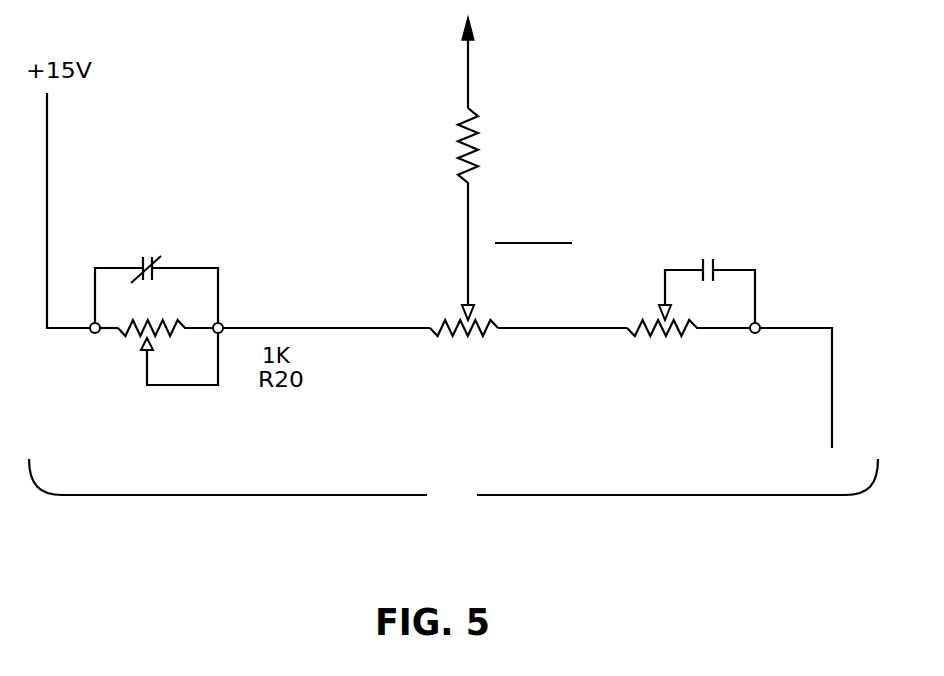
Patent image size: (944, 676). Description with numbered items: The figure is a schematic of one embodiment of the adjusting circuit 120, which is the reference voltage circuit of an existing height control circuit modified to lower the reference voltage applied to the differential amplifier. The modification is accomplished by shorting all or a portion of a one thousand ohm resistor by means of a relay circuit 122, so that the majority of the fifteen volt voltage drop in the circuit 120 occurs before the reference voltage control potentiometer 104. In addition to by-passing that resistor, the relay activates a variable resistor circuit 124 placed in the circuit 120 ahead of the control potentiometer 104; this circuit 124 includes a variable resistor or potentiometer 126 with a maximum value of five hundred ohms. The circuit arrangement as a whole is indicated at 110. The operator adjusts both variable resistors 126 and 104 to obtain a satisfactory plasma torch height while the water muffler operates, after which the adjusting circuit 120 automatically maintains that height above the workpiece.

The control potentiometer 104 is at (452, 318).
The resistor network circuit 110 is at (322, 412).
The adjusting circuit 120 is at (453, 482).
The relay circuit 122 is at (755, 297).
The variable resistor circuit 124 is at (218, 282).
The variable resistor 126 is at (141, 333).